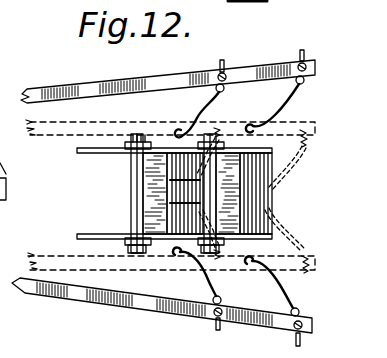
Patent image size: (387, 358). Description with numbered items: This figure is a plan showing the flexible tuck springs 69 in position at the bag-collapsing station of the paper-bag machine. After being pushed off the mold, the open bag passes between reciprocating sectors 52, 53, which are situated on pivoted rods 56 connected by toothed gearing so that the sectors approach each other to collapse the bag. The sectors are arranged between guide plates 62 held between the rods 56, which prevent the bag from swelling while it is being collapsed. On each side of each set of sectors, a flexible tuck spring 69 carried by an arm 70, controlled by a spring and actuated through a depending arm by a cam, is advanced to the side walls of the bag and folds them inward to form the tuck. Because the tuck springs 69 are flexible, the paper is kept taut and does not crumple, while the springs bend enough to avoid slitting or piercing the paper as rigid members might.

The sector 52 is at (143, 185).
The sector 53 is at (265, 198).
The pivoted rod 56 is at (232, 122).
The guide plate 62 is at (268, 157).
The flexible tuck spring 69 is at (195, 123).
The arm 70 is at (74, 80).